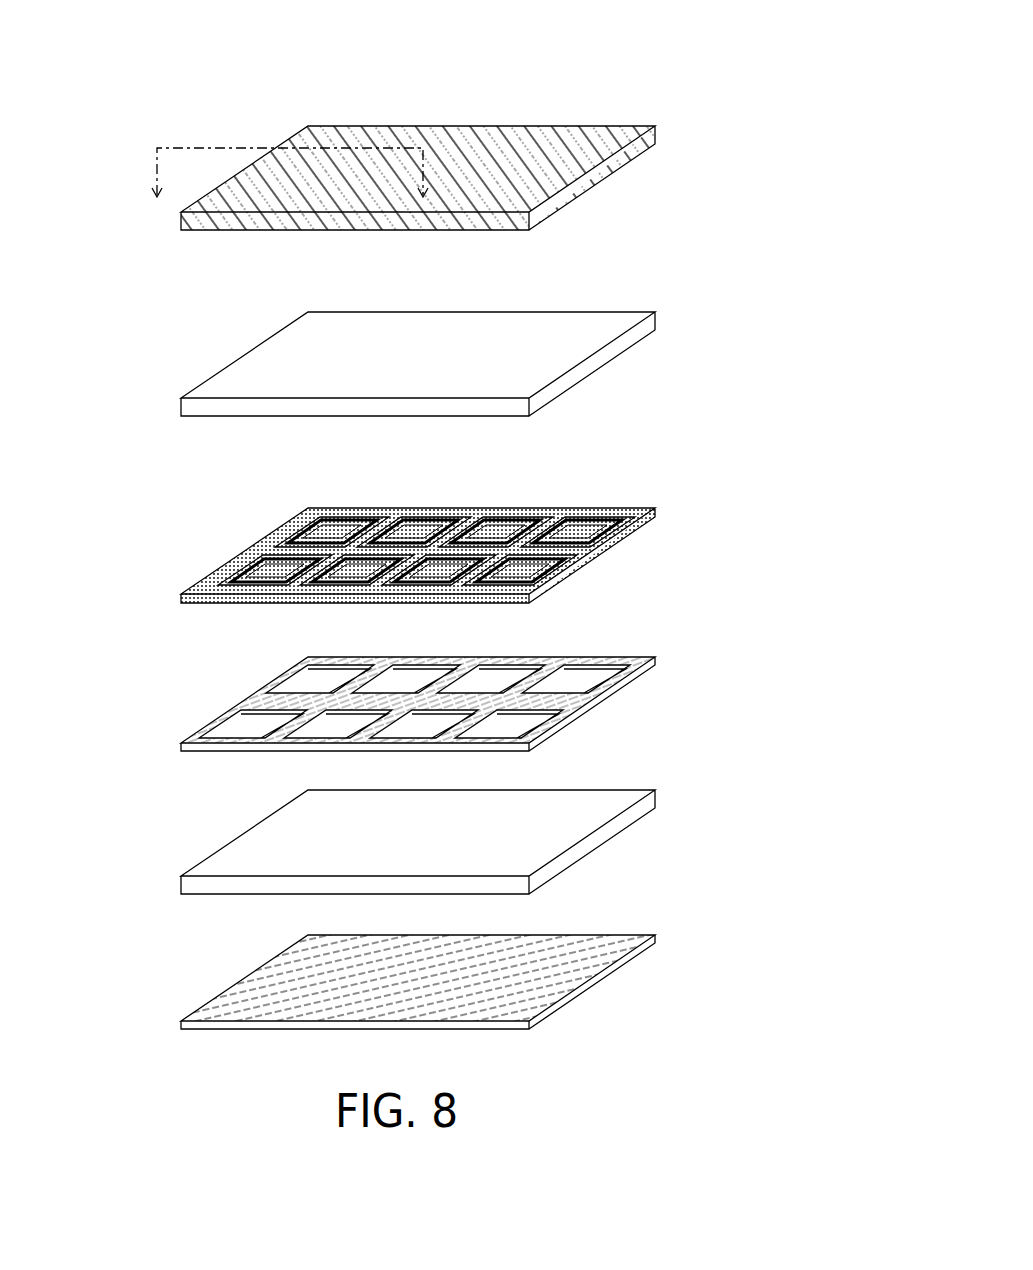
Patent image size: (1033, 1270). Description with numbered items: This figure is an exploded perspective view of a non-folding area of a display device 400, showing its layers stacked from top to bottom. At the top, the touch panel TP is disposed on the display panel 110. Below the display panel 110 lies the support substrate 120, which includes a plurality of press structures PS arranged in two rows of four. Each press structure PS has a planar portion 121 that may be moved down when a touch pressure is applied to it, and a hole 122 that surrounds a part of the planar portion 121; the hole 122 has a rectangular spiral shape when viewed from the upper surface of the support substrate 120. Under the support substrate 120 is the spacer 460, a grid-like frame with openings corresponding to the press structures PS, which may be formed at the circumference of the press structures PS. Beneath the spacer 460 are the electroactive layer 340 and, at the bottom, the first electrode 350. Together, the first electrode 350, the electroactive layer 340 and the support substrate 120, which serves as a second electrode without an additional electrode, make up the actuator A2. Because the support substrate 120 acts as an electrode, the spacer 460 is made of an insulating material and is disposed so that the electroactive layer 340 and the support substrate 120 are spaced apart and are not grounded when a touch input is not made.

The display device 400 is at (660, 30).
The touch panel TP is at (655, 133).
The display panel 110 is at (655, 320).
The support substrate 120 is at (409, 568).
The planar portion 121 is at (190, 599).
The hole 122 is at (232, 578).
The press structure PS is at (367, 570).
The spacer 460 is at (262, 690).
The electroactive layer 340 is at (655, 797).
The first electrode 350 is at (460, 980).
The actuator A2 is at (437, 766).